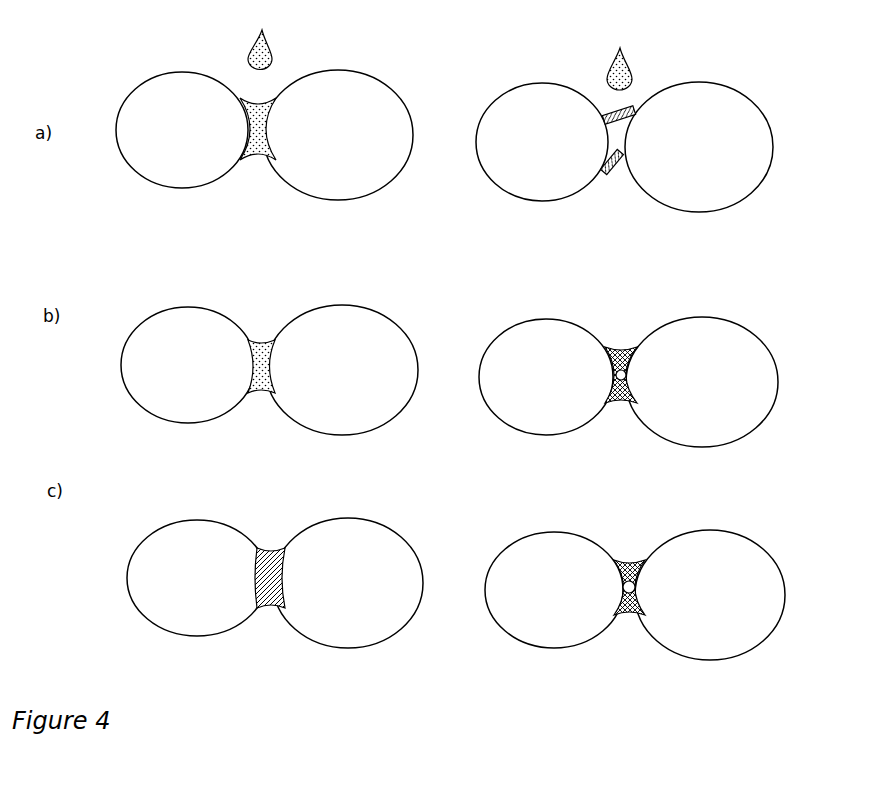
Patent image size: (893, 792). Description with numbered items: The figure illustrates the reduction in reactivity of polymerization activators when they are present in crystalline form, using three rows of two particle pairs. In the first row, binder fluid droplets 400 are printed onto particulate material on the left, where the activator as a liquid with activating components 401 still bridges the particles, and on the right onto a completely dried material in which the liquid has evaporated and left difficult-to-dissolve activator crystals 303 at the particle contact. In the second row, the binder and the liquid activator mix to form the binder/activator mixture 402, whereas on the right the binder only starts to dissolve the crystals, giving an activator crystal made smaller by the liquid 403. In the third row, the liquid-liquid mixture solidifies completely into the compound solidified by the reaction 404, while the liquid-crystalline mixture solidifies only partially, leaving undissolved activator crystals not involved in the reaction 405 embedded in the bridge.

The binder fluid droplets 400 is at (266, 55).
The activator as a liquid with activating components 401 is at (263, 151).
The activator crystals 303 is at (621, 109).
The binder/activator mixture 402 is at (264, 346).
The activator crystal made smaller by the liquid 403 is at (621, 356).
The compound solidified by the reaction 404 is at (271, 556).
The undissolved activator crystals not involved in the reaction 405 is at (626, 567).